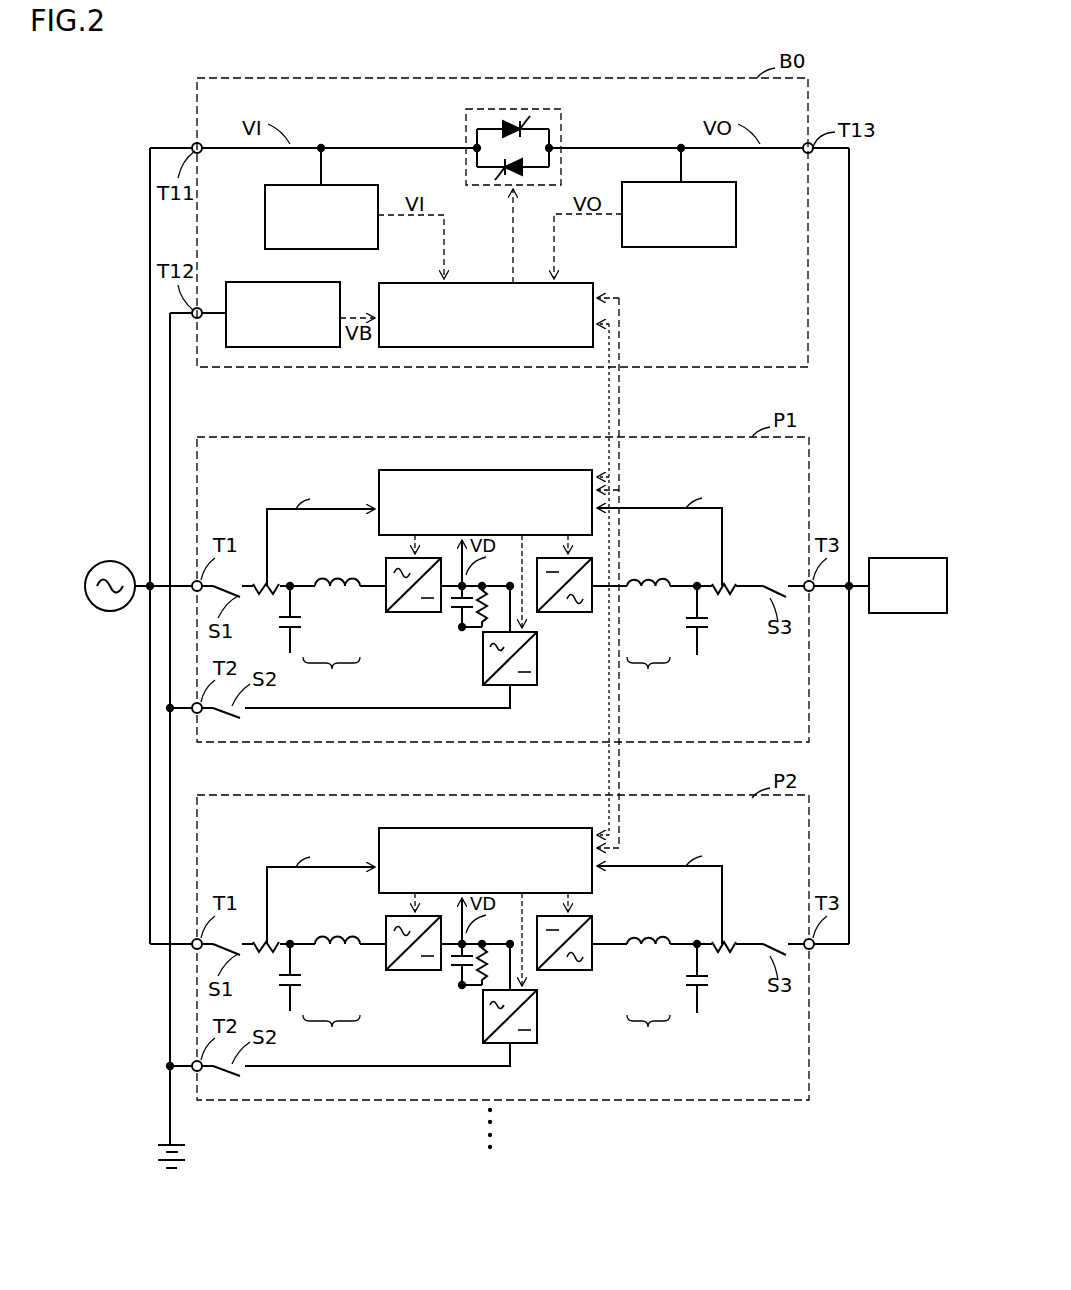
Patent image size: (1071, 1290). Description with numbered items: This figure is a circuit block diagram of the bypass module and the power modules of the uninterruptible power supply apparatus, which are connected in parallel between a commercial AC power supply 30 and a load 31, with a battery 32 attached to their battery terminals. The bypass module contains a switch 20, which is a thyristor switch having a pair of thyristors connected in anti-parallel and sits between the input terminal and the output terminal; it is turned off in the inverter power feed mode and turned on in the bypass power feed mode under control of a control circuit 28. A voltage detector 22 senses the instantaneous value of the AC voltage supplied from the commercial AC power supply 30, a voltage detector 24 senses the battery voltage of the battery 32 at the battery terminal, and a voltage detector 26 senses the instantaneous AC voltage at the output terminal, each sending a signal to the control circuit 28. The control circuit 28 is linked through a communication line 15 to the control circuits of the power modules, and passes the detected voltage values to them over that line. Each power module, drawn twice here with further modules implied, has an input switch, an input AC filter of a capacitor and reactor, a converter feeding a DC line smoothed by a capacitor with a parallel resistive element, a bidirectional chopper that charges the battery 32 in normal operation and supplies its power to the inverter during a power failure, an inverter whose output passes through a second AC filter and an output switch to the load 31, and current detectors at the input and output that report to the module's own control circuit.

The communication line 15 is at (605, 401).
The switch 20 is at (540, 115).
The voltage detector 22 is at (343, 185).
The voltage detector 24 is at (303, 282).
The voltage detector 26 is at (700, 182).
The control circuit 28 is at (568, 283).
The commercial AC power supply 30 is at (111, 560).
The load 31 is at (902, 558).
The battery 32 is at (177, 1144).